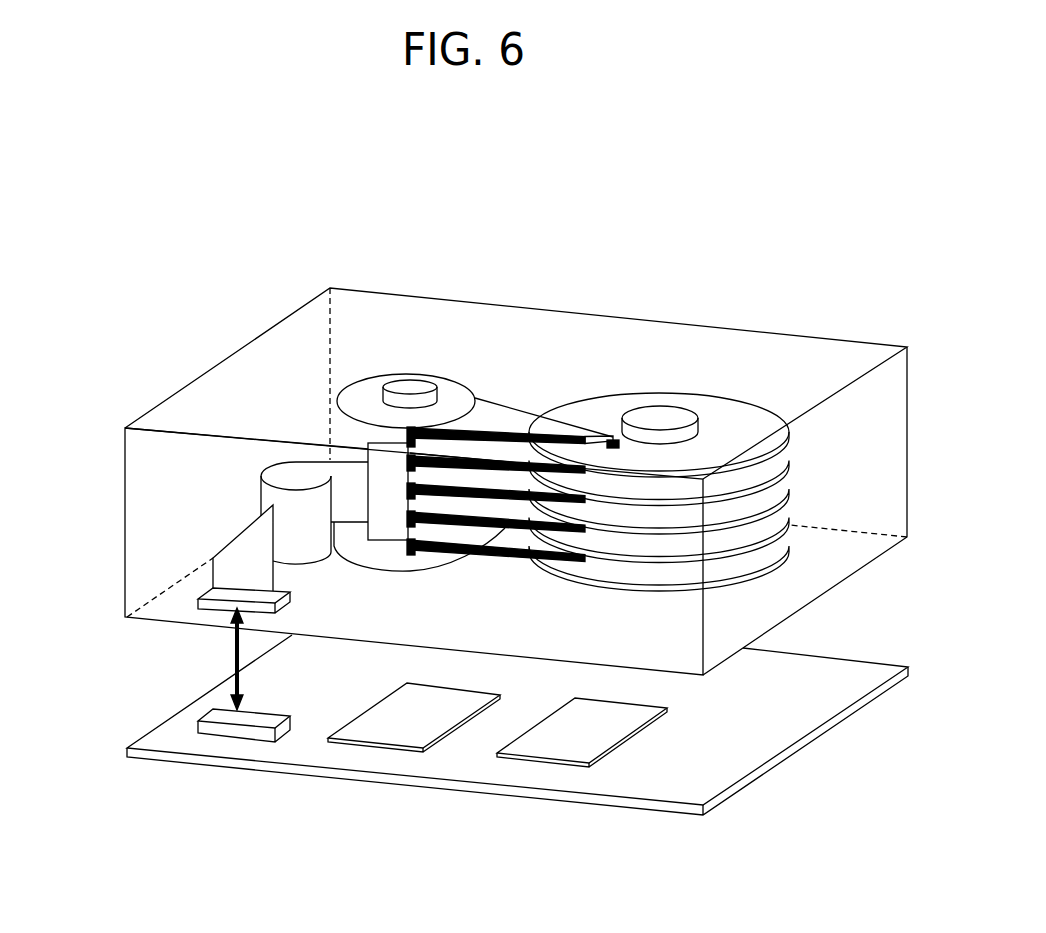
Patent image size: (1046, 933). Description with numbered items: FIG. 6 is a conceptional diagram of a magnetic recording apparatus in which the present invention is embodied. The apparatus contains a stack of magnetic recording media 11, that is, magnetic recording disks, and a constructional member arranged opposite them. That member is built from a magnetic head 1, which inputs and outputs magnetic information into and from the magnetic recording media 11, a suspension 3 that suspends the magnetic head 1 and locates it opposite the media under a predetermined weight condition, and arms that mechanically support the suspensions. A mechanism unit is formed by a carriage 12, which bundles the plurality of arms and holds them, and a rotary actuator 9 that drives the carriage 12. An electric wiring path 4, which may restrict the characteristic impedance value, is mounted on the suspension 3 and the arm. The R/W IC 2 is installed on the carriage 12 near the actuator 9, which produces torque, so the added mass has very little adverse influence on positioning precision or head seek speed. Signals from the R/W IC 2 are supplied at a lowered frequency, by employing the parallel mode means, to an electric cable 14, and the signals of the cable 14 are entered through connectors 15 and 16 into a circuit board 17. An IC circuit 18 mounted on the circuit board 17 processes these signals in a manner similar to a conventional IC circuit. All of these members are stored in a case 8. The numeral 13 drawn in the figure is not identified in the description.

The magnetic head 1 is at (622, 438).
The R/W IC 2 is at (388, 533).
The suspension 3 is at (600, 423).
The electric wiring path 4 is at (485, 555).
The case 8 is at (517, 303).
The rotary actuator 9 is at (403, 384).
The magnetic recording media 11 is at (738, 415).
The carriage 12 is at (328, 387).
The actuator arm 13 is at (517, 415).
The electric cable 14 is at (313, 563).
The connector 15 is at (192, 598).
The connector 16 is at (193, 723).
The circuit board 17 is at (730, 798).
The IC circuit 18 is at (543, 740).